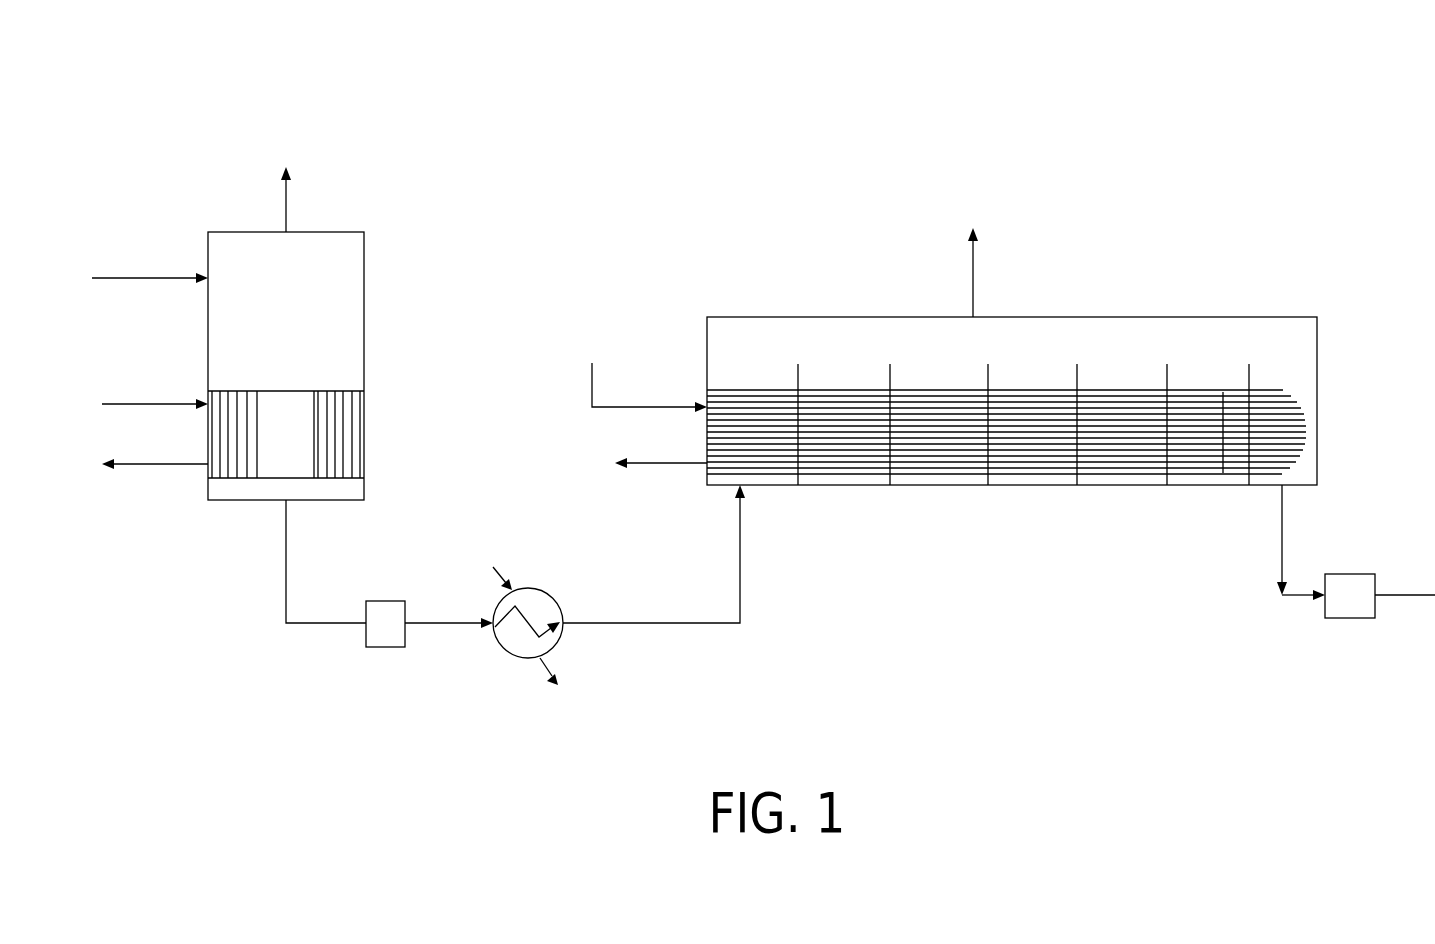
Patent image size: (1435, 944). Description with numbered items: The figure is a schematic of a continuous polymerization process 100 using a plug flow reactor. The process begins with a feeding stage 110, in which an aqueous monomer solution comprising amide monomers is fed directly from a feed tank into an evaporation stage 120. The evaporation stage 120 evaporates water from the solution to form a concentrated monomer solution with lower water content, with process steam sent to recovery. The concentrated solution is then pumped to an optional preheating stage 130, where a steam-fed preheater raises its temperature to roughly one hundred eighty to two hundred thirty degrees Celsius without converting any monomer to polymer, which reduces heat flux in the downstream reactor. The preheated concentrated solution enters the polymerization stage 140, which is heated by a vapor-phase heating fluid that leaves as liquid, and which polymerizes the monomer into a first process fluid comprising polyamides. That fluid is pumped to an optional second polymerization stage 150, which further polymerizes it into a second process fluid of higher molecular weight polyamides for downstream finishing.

The process 100 is at (1197, 226).
The feeding stage 110 is at (150, 260).
The evaporation stage 120 is at (364, 267).
The preheating stage 130 is at (500, 647).
The polymerization stage 140 is at (1047, 485).
The second polymerization stage 150 is at (1379, 616).